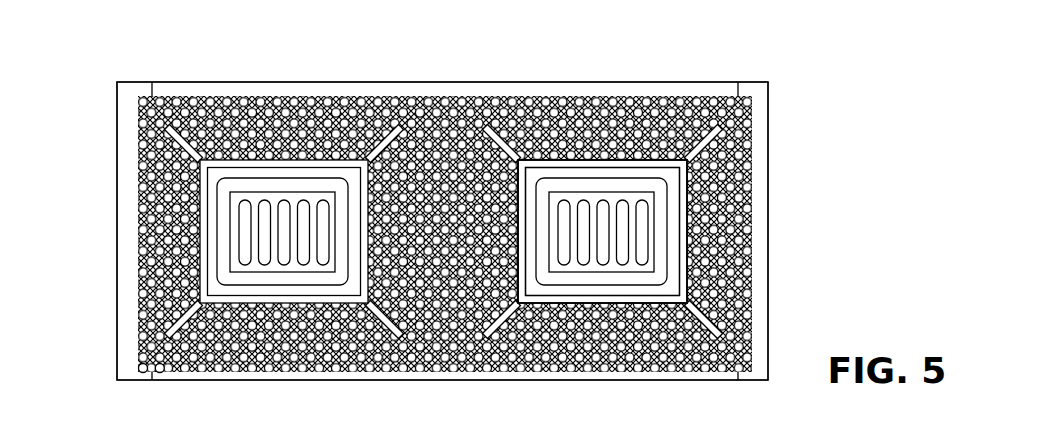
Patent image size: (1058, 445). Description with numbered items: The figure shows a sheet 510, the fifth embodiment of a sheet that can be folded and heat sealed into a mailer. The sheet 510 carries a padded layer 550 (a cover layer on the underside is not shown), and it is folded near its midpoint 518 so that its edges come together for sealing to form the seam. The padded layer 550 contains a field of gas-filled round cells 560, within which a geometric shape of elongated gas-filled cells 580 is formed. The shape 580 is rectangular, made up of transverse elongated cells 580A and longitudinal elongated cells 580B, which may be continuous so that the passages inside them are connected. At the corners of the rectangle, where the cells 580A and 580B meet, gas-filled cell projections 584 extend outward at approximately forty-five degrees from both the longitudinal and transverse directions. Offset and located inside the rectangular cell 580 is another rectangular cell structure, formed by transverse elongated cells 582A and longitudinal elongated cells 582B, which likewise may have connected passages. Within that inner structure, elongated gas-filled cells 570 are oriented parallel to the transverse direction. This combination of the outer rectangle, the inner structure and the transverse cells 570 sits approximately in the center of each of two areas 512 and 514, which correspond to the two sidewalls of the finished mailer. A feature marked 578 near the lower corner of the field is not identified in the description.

The sheet 510 is at (835, 35).
The area 512 is at (147, 62).
The area 514 is at (762, 59).
The midpoint 518 is at (453, 82).
The padded layer 550 is at (270, 110).
The round cells 560 is at (527, 133).
The elongated gas-filled cells 570 is at (242, 258).
The via array corner 578 is at (140, 365).
The elongated gas-filled round cells 580 is at (207, 223).
The transverse elongated cells 580A is at (687, 265).
The longitudinal elongated cells 580B is at (622, 160).
The transverse elongated cells 582A is at (660, 253).
The longitudinal elongated cells 582B is at (633, 197).
The gas-filled cell projections 584 is at (177, 133).